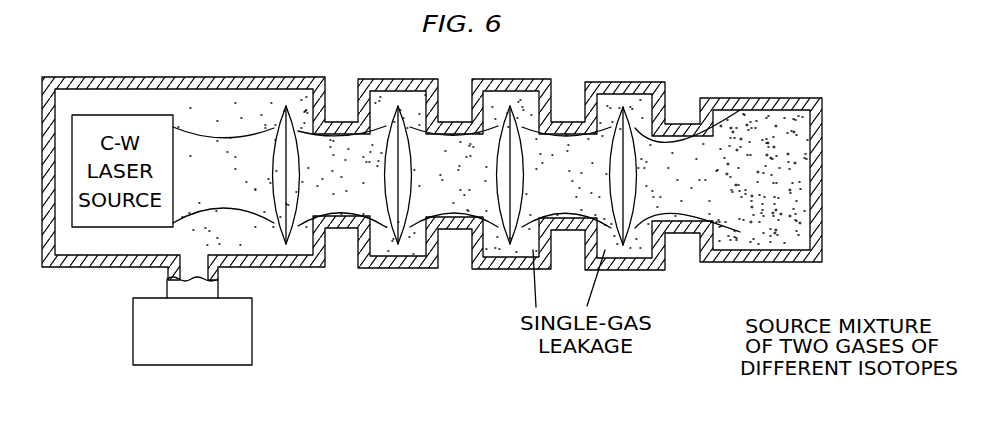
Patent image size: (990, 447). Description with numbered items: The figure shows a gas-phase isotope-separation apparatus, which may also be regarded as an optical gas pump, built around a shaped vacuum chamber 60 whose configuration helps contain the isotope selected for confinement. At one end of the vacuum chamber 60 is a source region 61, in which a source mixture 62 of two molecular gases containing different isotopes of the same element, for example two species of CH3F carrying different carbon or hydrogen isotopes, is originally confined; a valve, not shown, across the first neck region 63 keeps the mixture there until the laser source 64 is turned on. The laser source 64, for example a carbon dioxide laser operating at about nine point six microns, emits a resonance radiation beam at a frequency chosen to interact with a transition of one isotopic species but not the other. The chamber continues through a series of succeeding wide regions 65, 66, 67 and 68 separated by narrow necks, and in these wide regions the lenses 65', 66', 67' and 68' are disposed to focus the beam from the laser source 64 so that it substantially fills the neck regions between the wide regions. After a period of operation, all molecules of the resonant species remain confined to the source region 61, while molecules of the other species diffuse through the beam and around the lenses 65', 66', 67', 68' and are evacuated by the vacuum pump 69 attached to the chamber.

The vacuum chamber 60 is at (310, 78).
The source region 61 is at (783, 118).
The source mixture 62 is at (732, 237).
The first neck region 63 is at (681, 124).
The laser source 64 is at (163, 115).
The wide region 65 is at (618, 205).
The lens 65' is at (653, 176).
The wide region 66 is at (475, 204).
The lens 66' is at (535, 175).
The wide region 67 is at (364, 199).
The lens 67' is at (423, 175).
The wide region 68 is at (245, 200).
The lens 68' is at (267, 175).
The vacuum pump 69 is at (252, 338).